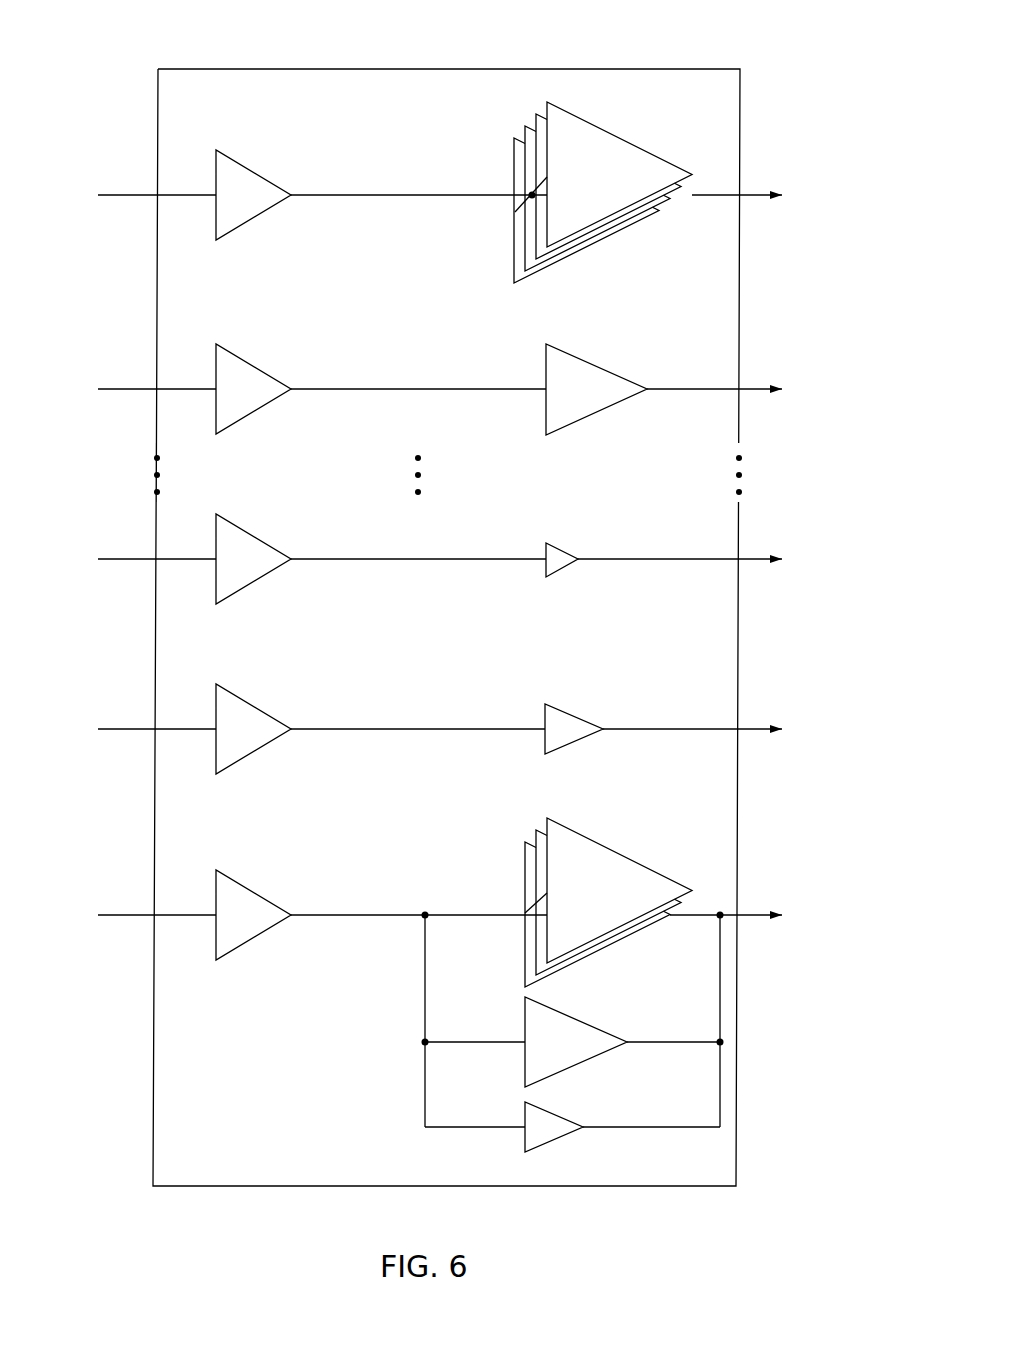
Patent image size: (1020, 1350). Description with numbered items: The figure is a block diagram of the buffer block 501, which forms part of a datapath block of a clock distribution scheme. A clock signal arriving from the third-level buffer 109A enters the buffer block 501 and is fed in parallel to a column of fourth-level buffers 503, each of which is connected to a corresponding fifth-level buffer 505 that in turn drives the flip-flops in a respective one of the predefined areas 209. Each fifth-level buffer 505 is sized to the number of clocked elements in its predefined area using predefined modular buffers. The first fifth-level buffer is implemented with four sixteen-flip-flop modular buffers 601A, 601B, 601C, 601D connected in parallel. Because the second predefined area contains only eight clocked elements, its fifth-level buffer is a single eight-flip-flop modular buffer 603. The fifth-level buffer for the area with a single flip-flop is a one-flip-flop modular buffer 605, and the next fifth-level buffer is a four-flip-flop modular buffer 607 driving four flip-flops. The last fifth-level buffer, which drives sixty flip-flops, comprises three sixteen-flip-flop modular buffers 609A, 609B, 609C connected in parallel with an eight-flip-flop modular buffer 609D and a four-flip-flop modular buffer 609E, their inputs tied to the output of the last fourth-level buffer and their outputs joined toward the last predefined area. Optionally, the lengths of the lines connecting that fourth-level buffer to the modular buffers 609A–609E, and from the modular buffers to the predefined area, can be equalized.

The buffer block 501 is at (637, 48).
The fourth-level buffers 503 is at (267, 877).
The fifth-level buffers 505 is at (573, 613).
The sixteen-flip-flop modular buffer 601A is at (547, 102).
The sixteen-flip-flop modular buffer 601B is at (536, 116).
The sixteen-flip-flop modular buffer 601C is at (525, 128).
The sixteen-flip-flop modular buffer 601D is at (514, 141).
The eight-flip-flop modular buffer 603 is at (546, 352).
The one-flip-flop modular buffer 605 is at (546, 544).
The four-flip-flop modular buffer 607 is at (545, 707).
The sixteen-flip-flop modular buffer 609A is at (547, 822).
The sixteen-flip-flop modular buffer 609B is at (536, 838).
The sixteen-flip-flop modular buffer 609C is at (525, 857).
The eight-flip-flop modular buffer 609D is at (525, 1000).
The four-flip-flop modular buffer 609E is at (525, 1105).
The predefined areas 209 is at (838, 558).
The third-level buffer 109A is at (126, 555).